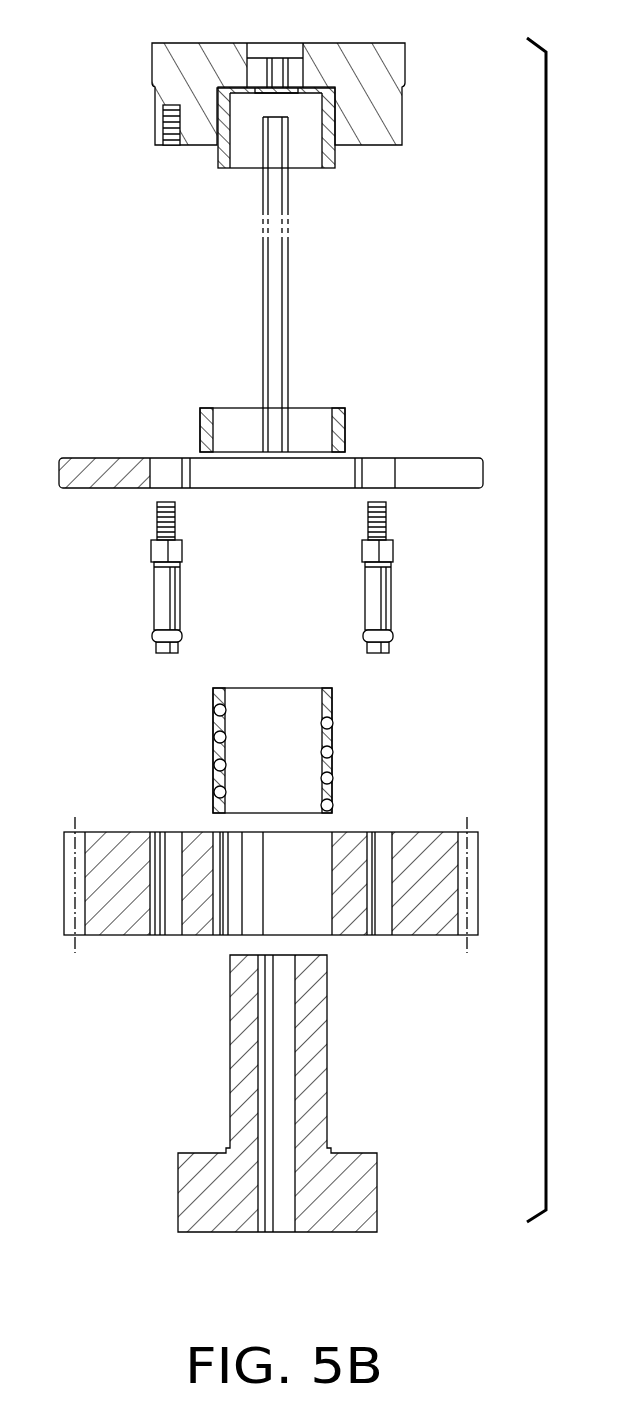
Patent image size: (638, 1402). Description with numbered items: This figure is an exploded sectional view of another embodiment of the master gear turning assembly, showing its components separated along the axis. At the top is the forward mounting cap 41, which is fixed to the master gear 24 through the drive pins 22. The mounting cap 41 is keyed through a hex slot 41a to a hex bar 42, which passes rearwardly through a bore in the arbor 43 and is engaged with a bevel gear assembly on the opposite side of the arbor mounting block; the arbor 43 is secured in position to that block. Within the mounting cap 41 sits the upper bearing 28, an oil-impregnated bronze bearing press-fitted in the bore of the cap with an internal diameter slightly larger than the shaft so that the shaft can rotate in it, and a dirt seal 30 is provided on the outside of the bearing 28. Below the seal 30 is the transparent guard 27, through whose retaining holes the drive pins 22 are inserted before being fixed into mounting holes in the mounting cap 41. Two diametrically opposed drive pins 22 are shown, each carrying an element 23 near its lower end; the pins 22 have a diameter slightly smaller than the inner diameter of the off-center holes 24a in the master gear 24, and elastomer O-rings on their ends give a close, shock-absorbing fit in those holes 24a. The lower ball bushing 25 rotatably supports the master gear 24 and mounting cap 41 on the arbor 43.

The forward mounting cap 41 is at (150, 65).
The hex slot 41a is at (265, 58).
The upper bearing 28 is at (225, 160).
The hex bar 42 is at (265, 290).
The seal 30 is at (324, 408).
The guard 27 is at (458, 460).
The drive pins 22 is at (173, 550).
The collar 23 is at (157, 638).
The lower ball bushing 25 is at (327, 742).
The master gear 24 is at (443, 837).
The off-center holes 24a is at (165, 803).
The arbor 43 is at (182, 1178).